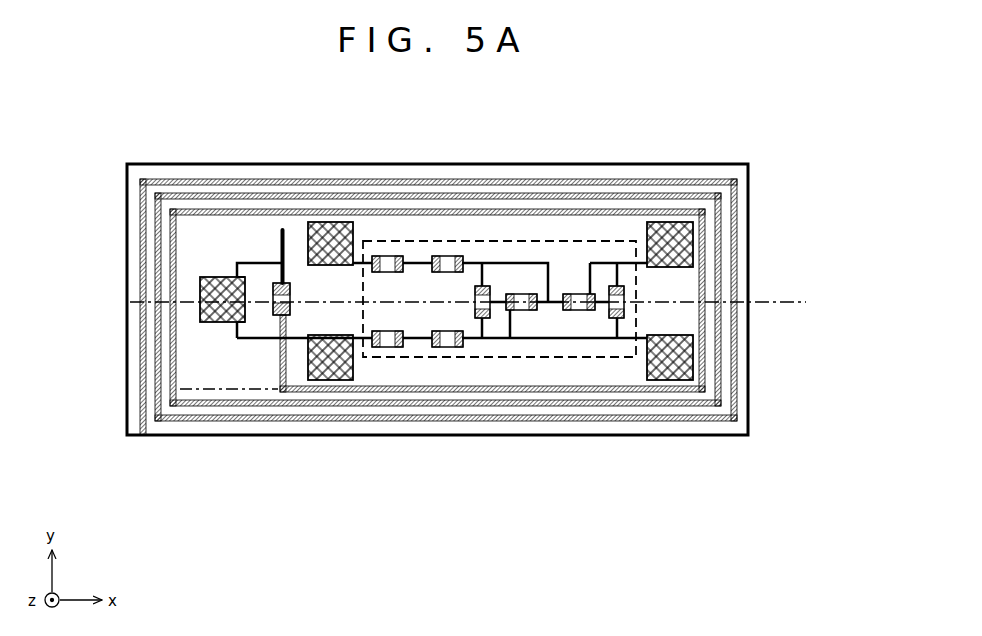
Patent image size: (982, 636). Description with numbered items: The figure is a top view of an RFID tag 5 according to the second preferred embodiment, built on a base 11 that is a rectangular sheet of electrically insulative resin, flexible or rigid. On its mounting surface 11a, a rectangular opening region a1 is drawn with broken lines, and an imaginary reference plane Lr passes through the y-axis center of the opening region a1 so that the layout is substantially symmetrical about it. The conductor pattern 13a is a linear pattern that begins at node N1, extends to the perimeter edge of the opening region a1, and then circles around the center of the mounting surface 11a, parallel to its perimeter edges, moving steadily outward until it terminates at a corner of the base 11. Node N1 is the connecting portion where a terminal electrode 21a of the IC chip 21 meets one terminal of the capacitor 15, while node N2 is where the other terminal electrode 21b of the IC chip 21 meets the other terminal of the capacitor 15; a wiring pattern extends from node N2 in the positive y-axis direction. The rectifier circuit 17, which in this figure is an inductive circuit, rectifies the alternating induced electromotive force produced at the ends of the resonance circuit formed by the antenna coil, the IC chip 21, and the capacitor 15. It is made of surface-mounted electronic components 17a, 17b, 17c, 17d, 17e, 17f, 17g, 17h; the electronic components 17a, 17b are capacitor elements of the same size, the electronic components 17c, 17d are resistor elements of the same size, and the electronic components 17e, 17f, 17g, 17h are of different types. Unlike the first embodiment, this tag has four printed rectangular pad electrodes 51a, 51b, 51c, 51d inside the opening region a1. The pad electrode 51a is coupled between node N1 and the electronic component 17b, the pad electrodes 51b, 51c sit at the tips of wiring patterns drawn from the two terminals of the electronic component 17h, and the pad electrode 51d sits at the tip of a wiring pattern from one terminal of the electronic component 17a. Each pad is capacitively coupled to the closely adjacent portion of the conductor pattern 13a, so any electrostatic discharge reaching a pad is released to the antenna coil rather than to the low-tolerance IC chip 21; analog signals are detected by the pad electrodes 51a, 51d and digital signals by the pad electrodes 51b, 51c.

The RFID tag 5 is at (110, 109).
The base 11 is at (758, 182).
The mounting surface 11a is at (632, 224).
The conductor pattern 13a is at (258, 176).
The capacitor 15 is at (268, 328).
The rectifier circuit 17 is at (566, 240).
The electronic component 17a is at (384, 255).
The electronic component 17b is at (388, 348).
The electronic component 17c is at (446, 255).
The electronic component 17d is at (448, 348).
The electronic component 17e is at (487, 319).
The electronic component 17f is at (536, 311).
The electronic component 17g is at (579, 311).
The electronic component 17h is at (625, 320).
The IC chip 21 is at (200, 297).
The terminal electrode 21a is at (228, 324).
The terminal electrode 21b is at (226, 279).
The pad electrode 51a is at (331, 380).
The pad electrode 51b is at (692, 348).
The pad electrode 51c is at (692, 262).
The pad electrode 51d is at (330, 222).
The node N1 is at (289, 336).
The node N2 is at (280, 257).
The reference plane Lr is at (480, 305).
The opening region a1 is at (684, 207).